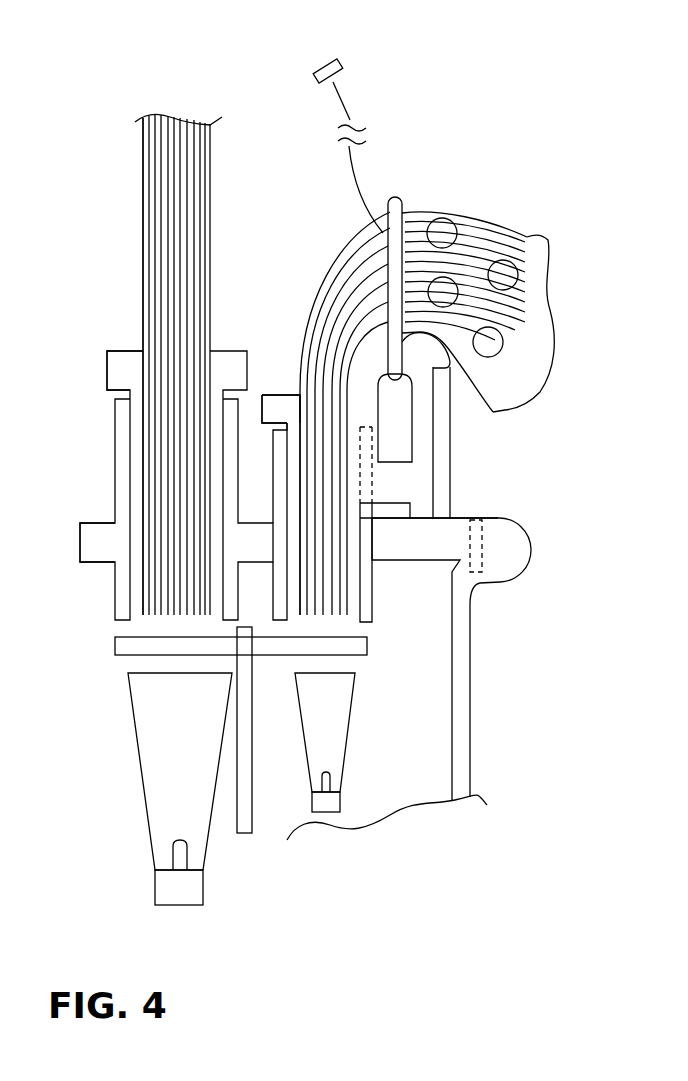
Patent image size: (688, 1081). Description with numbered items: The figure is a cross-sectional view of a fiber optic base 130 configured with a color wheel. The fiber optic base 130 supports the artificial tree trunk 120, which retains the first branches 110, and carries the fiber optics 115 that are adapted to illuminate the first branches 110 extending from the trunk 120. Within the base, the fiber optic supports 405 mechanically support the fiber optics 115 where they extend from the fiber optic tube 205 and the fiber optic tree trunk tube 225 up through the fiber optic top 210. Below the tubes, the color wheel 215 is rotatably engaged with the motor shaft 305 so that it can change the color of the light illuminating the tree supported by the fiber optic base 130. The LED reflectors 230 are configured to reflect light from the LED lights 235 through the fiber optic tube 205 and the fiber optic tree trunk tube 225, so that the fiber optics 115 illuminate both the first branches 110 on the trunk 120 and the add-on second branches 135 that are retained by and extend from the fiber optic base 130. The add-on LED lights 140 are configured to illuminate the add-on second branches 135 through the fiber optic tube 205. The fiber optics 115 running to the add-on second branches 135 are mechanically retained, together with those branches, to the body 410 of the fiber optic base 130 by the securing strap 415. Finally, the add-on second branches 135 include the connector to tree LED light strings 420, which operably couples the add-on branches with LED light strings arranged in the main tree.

The first branches 110 is at (330, 340).
The fiber optics 115 is at (170, 120).
The artificial tree trunk 120 is at (142, 198).
The fiber optic base 130 is at (89, 108).
The add-on second branches 135 is at (527, 237).
The add-on LED lights 140 is at (502, 260).
The fiber optic tube 205 is at (372, 580).
The fiber optic top 210 is at (515, 550).
The color wheel 215 is at (367, 643).
The fiber optic tree trunk tube 225 is at (115, 615).
The LED reflectors 230 is at (140, 735).
The LED lights 235 is at (173, 845).
The motor shaft 305 is at (252, 820).
The fiber optic supports 405 is at (360, 377).
The body 410 is at (472, 745).
The securing strap 415 is at (390, 198).
The connector to tree LED light strings 420 is at (333, 58).